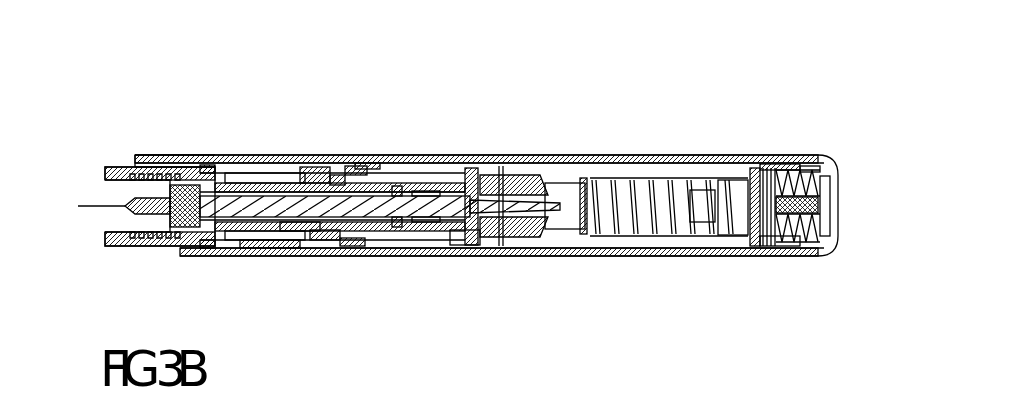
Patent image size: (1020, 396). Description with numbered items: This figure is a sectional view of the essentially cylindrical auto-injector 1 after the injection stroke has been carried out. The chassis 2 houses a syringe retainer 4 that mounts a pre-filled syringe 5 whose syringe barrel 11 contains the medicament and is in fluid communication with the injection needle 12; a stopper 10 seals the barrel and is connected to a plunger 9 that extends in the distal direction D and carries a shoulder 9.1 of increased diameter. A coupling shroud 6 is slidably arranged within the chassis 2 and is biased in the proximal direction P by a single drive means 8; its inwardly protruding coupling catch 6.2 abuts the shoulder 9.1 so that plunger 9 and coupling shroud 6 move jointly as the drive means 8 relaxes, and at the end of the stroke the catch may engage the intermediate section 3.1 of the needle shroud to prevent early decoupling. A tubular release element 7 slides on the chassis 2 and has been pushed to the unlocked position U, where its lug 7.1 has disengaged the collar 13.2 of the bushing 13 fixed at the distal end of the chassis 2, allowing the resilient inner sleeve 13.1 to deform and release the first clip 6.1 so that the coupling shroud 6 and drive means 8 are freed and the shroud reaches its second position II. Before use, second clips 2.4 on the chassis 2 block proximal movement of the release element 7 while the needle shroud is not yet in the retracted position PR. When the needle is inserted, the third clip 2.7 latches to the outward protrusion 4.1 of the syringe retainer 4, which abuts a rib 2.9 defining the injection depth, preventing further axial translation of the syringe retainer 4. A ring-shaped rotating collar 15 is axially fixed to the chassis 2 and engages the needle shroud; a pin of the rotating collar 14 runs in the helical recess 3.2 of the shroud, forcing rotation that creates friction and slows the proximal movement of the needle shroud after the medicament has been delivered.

The auto-injector 1 is at (416, 87).
The chassis 2 is at (623, 157).
The second clips 2.4 is at (783, 160).
The third clip 2.7 is at (363, 160).
The rib 2.9 is at (325, 157).
The intermediate section 3.1 is at (470, 247).
The helical recess 3.2 is at (243, 255).
The syringe retainer 4 is at (277, 157).
The outward protrusion 4.1 is at (348, 157).
The pre-filled syringe 5 is at (282, 249).
The coupling shroud 6 is at (533, 157).
The first clip 6.1 is at (592, 157).
The coupling catch 6.2 is at (468, 157).
The release element 7 is at (257, 157).
The lug 7.1 is at (822, 212).
The drive means 8 is at (620, 249).
The plunger 9 is at (402, 250).
The shoulder 9.1 is at (463, 247).
The stopper 10 is at (172, 157).
The syringe barrel 11 is at (318, 249).
The injection needle 12 is at (74, 158).
The bushing 13 is at (833, 168).
The inner sleeve 13.1 is at (820, 255).
The collar 13.2 is at (787, 252).
The rotating collar 14 is at (133, 247).
The rotating collar 15 is at (207, 157).
The proximal direction P is at (112, 206).
The retracted position PR is at (121, 157).
The distal direction D is at (869, 208).
The unlocked position U is at (793, 170).
The second position II is at (498, 157).